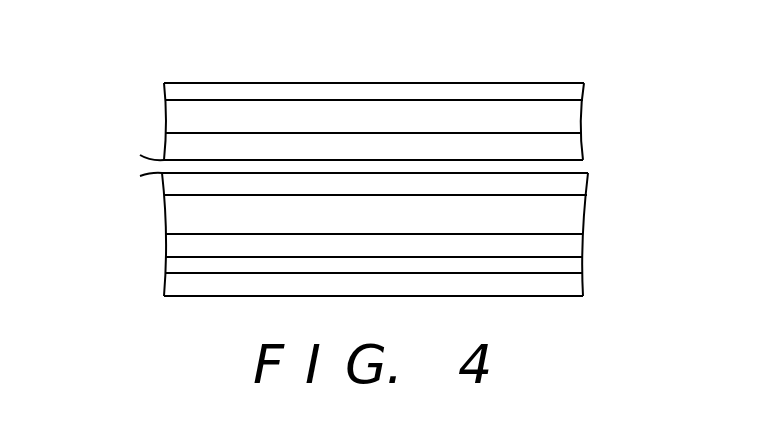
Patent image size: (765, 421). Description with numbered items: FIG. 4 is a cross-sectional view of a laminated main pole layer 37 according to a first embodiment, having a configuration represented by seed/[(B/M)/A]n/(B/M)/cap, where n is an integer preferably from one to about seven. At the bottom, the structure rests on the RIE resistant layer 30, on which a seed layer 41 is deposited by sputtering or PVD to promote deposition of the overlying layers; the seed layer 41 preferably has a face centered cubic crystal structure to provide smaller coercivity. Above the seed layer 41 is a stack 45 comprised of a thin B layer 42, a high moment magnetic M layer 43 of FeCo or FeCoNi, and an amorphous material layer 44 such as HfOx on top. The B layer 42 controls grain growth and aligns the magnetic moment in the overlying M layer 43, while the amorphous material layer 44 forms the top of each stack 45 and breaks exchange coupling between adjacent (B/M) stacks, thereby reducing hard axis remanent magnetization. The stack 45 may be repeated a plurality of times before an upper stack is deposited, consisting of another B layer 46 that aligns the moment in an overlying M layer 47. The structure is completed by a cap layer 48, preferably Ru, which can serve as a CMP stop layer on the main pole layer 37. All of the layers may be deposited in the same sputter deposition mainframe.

The laminated main pole layer 37 is at (132, 57).
The cap layer 48 is at (563, 97).
The M layer 47 is at (563, 120).
The B layer 46 is at (563, 149).
The stack 45 is at (142, 175).
The amorphous material layer 44 is at (563, 182).
The M layer 43 is at (563, 215).
The B layer 42 is at (563, 250).
The seed layer 41 is at (187, 262).
The RIE resistant layer 30 is at (563, 289).